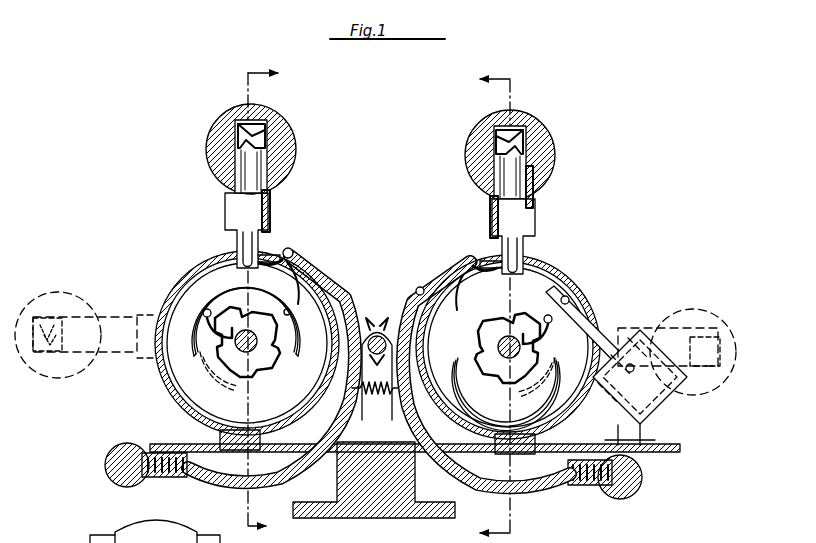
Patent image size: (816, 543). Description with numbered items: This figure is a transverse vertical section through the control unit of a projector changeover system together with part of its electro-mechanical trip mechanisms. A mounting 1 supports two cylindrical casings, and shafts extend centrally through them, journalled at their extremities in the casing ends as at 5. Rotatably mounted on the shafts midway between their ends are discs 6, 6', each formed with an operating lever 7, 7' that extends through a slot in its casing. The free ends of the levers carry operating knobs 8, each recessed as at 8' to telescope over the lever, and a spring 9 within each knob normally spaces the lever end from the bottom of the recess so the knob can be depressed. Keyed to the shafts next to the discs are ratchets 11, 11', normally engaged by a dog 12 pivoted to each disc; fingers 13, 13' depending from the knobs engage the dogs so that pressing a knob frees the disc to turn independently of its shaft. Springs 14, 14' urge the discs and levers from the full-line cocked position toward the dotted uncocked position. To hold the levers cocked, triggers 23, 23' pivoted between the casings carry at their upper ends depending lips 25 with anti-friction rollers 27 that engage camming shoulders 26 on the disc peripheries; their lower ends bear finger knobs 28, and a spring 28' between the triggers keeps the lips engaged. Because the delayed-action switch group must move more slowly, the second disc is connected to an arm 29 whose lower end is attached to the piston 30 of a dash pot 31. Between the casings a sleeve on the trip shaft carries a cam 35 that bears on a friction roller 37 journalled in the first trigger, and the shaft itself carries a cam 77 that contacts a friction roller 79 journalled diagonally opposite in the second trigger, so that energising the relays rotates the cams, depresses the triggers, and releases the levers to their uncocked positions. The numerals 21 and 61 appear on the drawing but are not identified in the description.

The mounting 1 is at (416, 496).
The journal bearing 5 is at (263, 297).
The disc 6 is at (332, 296).
The disc 6' is at (508, 354).
The operating lever 7 is at (277, 208).
The operating lever 7' is at (524, 202).
The operating knob 8 is at (394, 152).
The recess 8' is at (353, 177).
The spring 9 is at (268, 126).
The ratchet 11 is at (266, 342).
The ratchet 11' is at (501, 355).
The dog 12 is at (243, 284).
The finger 13 is at (236, 230).
The finger 13' is at (524, 236).
The spring 14 is at (210, 371).
The spring 14' is at (544, 377).
The detent 21 is at (269, 267).
The trigger 23 is at (392, 366).
The trigger 23' is at (486, 359).
The lip 25 is at (290, 248).
The camming shoulder 26 is at (374, 286).
The anti-friction roller 27 is at (487, 271).
The knob 28 is at (375, 471).
The spring 28' is at (379, 396).
The arm 29 is at (590, 318).
The piston 30 is at (664, 366).
The dash pot 31 is at (164, 520).
The cam 35 is at (379, 369).
The friction roller 37 is at (376, 362).
The pawl 61 is at (203, 314).
The cam 77 is at (382, 310).
The friction roller 79 is at (392, 318).